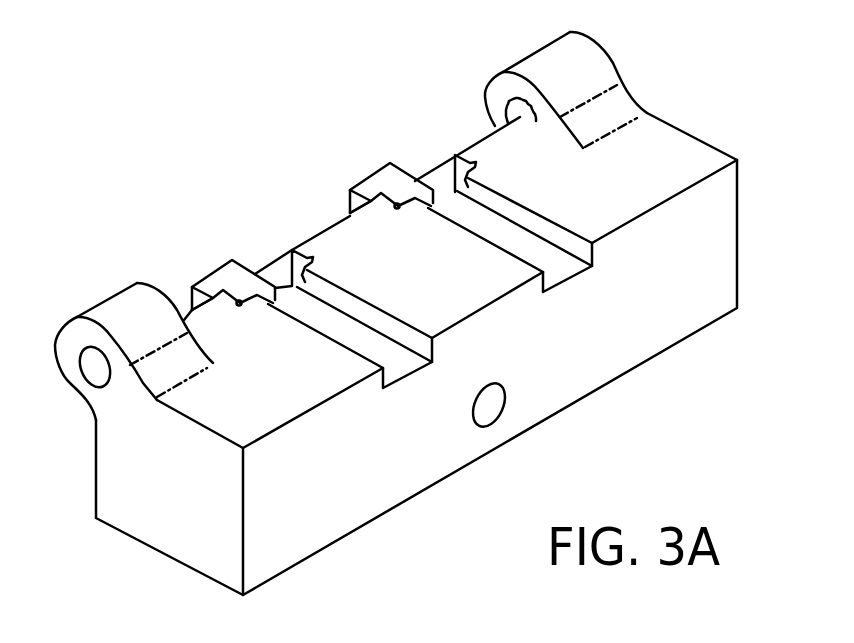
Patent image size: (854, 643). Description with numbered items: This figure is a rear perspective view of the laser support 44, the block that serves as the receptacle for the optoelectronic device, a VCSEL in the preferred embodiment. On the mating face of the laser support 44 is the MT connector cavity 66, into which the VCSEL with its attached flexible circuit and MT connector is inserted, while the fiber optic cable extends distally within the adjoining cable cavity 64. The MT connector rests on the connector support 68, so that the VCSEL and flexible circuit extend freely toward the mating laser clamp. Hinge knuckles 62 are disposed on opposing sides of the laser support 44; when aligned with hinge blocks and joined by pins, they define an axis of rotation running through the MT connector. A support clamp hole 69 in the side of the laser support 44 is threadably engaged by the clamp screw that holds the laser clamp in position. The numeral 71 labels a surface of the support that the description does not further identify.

The laser support 44 is at (728, 305).
The hinge knuckles 62 is at (90, 307).
The cable cavity 64 is at (393, 361).
The MT connector cavity 66 is at (282, 285).
The connector support 68 is at (212, 270).
The support clamp hole 69 is at (507, 407).
The front face 71 is at (307, 528).